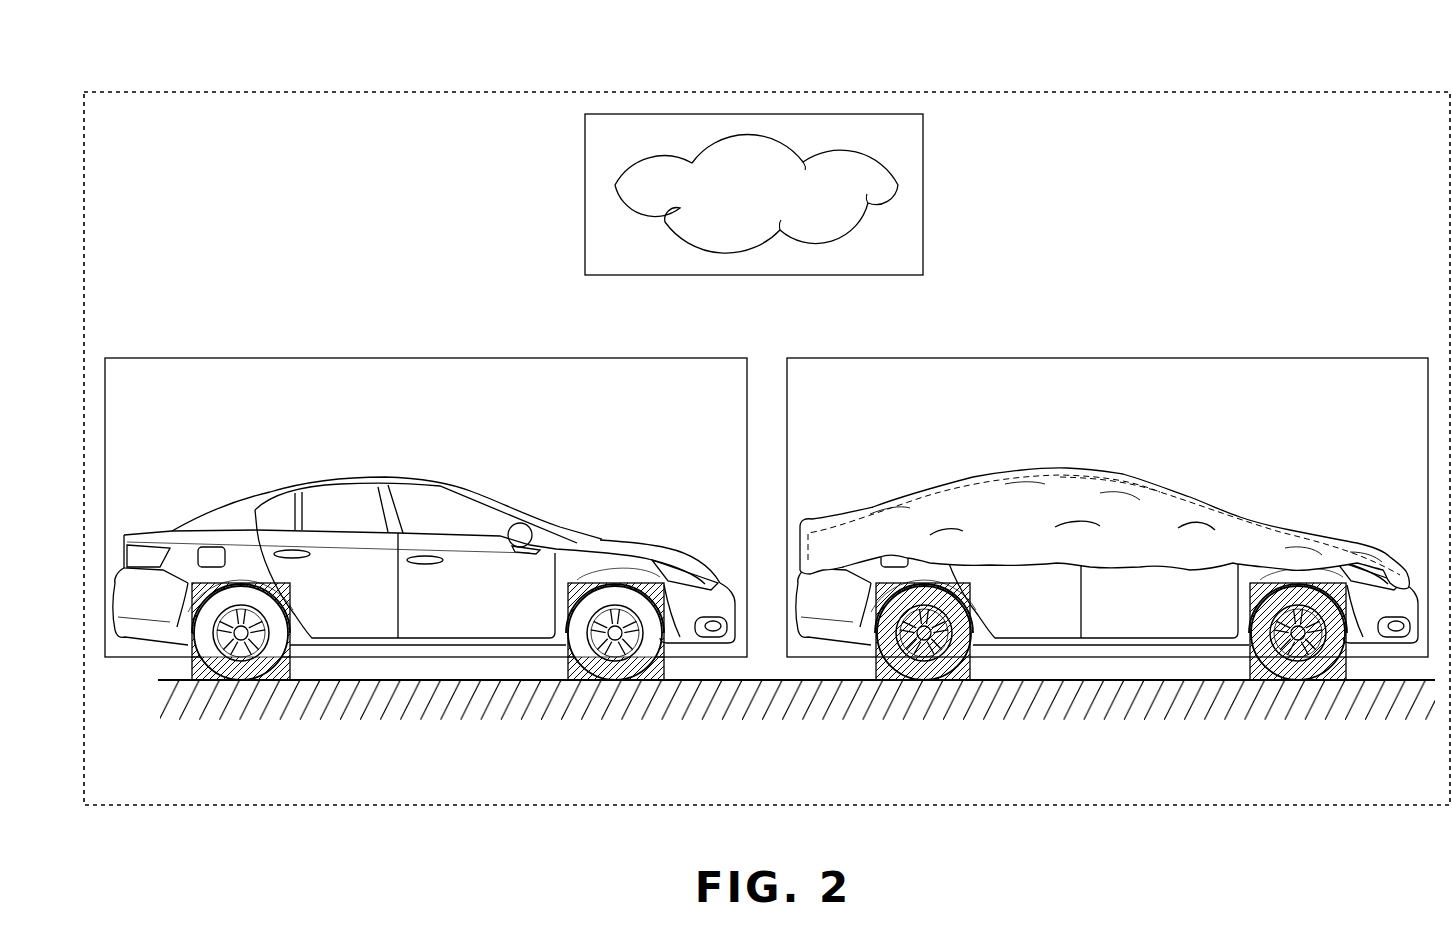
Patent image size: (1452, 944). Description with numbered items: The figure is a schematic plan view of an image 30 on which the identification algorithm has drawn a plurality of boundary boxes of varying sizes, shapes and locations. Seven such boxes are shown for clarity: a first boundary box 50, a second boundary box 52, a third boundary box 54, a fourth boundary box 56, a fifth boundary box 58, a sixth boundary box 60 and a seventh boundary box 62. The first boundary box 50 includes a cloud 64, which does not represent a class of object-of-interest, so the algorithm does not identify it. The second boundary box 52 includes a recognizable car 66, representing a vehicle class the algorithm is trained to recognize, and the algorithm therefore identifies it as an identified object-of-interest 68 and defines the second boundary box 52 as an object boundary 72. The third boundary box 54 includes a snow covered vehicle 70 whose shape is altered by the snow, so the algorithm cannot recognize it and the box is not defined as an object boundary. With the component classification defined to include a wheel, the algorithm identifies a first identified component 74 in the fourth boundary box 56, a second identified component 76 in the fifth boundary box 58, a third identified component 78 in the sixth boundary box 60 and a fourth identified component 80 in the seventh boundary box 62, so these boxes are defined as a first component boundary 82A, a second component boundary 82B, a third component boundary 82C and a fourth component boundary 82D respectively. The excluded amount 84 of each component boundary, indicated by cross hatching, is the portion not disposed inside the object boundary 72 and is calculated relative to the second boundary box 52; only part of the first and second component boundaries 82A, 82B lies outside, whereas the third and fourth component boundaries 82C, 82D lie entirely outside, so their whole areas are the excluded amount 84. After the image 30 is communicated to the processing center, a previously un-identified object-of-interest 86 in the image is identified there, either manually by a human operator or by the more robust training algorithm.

The image 30 is at (1041, 92).
The first boundary box 50 is at (923, 205).
The second boundary box 52 is at (447, 358).
The third boundary box 54 is at (932, 358).
The fourth boundary box 56 is at (278, 683).
The fifth boundary box 58 is at (655, 683).
The sixth boundary box 60 is at (950, 680).
The seventh boundary box 62 is at (1325, 680).
The cloud 64 is at (697, 254).
The recognizable car 66 is at (375, 478).
The identified object-of-interest 68 is at (520, 505).
The snow covered vehicle 70 is at (1030, 470).
The object boundary 72 is at (282, 358).
The first identified component 74 is at (200, 680).
The second identified component 76 is at (575, 680).
The third identified component 78 is at (880, 680).
The fourth identified component 80 is at (1258, 680).
The first component boundary 82A is at (192, 680).
The second component boundary 82B is at (568, 680).
The third component boundary 82C is at (876, 680).
The fourth component boundary 82D is at (1250, 680).
The excluded amount 84 is at (270, 680).
The previously un-identified object-of-interest 86 is at (1117, 478).